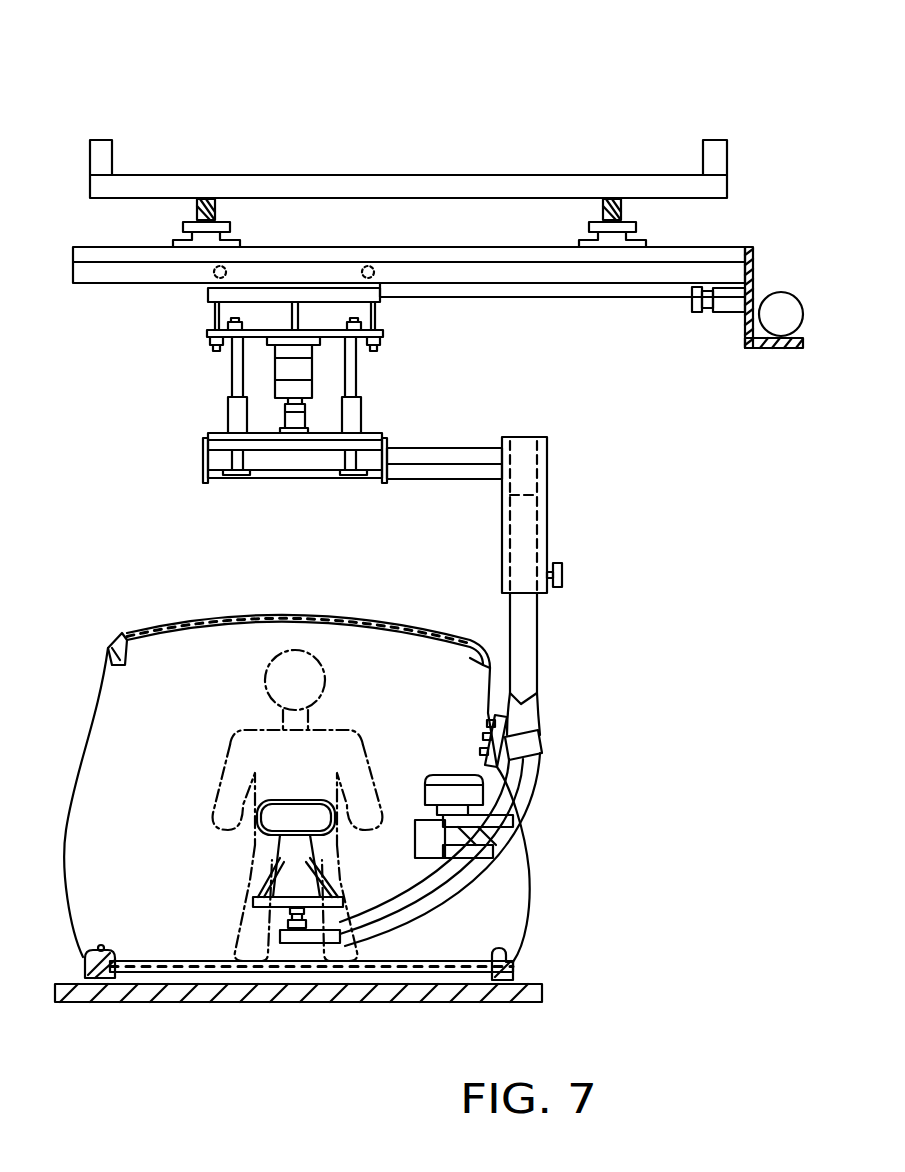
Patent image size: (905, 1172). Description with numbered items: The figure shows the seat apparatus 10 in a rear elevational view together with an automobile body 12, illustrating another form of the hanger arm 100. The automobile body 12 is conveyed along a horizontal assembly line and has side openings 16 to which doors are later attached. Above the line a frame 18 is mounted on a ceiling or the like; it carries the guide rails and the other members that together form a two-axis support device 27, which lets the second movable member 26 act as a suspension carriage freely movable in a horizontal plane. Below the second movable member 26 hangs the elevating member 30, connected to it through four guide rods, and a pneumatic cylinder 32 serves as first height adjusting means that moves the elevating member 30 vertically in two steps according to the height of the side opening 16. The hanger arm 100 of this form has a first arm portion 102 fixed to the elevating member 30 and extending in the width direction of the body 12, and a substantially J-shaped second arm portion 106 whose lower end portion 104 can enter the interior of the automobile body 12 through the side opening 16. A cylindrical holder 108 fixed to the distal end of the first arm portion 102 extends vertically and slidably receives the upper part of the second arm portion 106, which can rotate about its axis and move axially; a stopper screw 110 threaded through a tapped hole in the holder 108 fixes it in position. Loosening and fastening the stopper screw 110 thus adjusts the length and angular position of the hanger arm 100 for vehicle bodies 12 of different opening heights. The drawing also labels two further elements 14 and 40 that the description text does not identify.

The seat apparatus 10 is at (438, 281).
The automobile body 12 is at (296, 753).
The floor 14 is at (382, 988).
The side opening 16 is at (490, 640).
The frame 18 is at (380, 175).
The second movable member 26 is at (318, 298).
The two-axis support device 27 is at (262, 371).
The elevating member 30 is at (273, 440).
The pneumatic cylinder 32 is at (297, 365).
The seat 40 is at (248, 857).
The hanger arm 100 is at (465, 711).
The first arm portion 102 is at (448, 457).
The lower end portion 104 is at (293, 943).
The second arm portion 106 is at (530, 658).
The cylindrical holder 108 is at (527, 480).
The stopper screw 110 is at (562, 573).